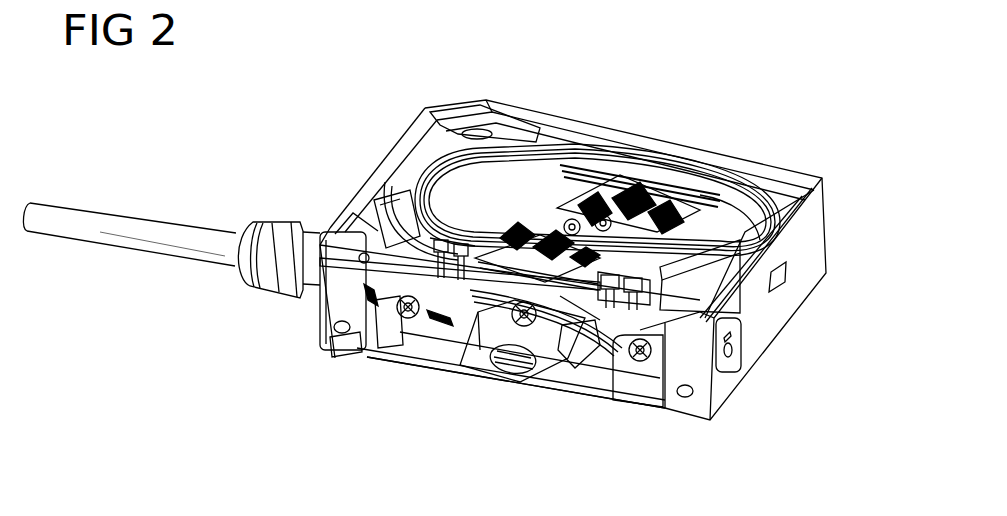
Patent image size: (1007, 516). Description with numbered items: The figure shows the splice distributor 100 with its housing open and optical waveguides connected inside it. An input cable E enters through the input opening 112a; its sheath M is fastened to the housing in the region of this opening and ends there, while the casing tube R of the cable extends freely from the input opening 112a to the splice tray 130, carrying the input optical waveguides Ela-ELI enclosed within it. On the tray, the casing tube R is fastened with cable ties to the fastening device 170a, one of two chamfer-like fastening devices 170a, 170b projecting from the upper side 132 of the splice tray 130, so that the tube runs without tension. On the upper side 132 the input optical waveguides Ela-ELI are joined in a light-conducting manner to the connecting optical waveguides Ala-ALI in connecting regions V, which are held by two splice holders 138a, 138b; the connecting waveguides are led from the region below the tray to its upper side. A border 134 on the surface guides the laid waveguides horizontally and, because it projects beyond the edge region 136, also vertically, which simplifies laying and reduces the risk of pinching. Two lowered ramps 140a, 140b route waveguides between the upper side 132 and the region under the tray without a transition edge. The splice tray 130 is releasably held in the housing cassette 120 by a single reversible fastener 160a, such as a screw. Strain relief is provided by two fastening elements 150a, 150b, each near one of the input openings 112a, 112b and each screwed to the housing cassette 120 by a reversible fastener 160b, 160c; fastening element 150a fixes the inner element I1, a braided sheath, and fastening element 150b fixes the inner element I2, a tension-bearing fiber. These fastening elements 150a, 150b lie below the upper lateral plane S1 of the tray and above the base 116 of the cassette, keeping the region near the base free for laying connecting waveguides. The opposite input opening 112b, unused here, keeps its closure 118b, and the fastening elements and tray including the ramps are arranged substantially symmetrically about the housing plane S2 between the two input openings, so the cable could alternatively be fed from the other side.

The splice distributor 100 is at (250, 150).
The input cable E is at (110, 213).
The sheath M is at (151, 240).
The input opening 112a is at (350, 250).
The input opening 112b is at (737, 327).
The base 116 is at (482, 312).
The closure 118b is at (730, 350).
The housing cassette 120 is at (490, 108).
The splice tray 130 is at (823, 182).
The upper side 132 is at (737, 237).
The border 134 is at (382, 217).
The edge region 136 is at (392, 223).
The splice holder 138a is at (625, 175).
The splice holder 138b is at (687, 203).
The ramp 140a is at (485, 312).
The ramp 140b is at (568, 330).
The fastening element 150a is at (333, 350).
The fastening element 150b is at (618, 352).
The reversible fastener 160a is at (515, 320).
The reversible fastener 160b is at (410, 310).
The reversible fastener 160c is at (640, 360).
The fastening device 170a is at (646, 297).
The fastening device 170b is at (440, 237).
The casing tube R is at (377, 272).
The inner element I1 is at (367, 295).
The inner element I2 is at (457, 328).
The connecting regions V is at (603, 255).
The upper lateral plane S1 is at (828, 222).
The housing plane S2 is at (508, 387).
The input optical waveguides Ela-ELI is at (717, 232).
The connecting optical waveguides Ala-ALI is at (690, 327).